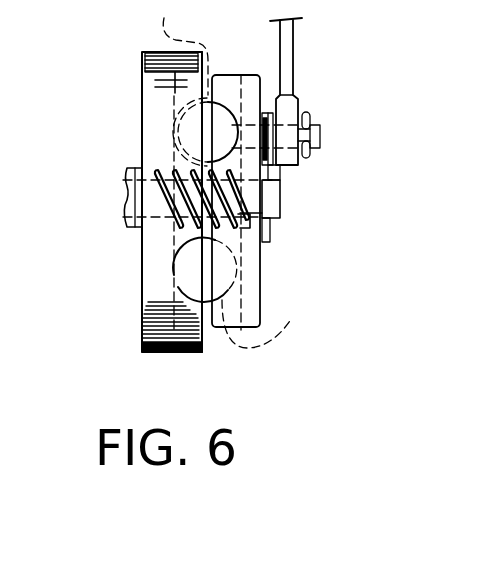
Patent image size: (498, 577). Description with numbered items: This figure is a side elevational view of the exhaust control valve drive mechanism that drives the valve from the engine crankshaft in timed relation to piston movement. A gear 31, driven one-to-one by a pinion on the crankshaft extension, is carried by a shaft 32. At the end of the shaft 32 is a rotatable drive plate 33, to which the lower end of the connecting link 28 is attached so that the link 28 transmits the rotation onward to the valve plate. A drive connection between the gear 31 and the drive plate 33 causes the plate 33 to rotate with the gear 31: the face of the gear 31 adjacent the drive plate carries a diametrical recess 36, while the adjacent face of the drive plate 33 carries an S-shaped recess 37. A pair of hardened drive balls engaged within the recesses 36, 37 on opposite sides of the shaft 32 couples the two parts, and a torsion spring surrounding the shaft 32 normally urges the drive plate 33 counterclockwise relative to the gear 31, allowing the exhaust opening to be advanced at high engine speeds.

The connecting link 28 is at (290, 50).
The gear 31 is at (152, 62).
The shaft 32 is at (281, 212).
The drive plate 33 is at (230, 90).
The diametrical recess 36 is at (185, 85).
The S-shaped recess 37 is at (280, 324).